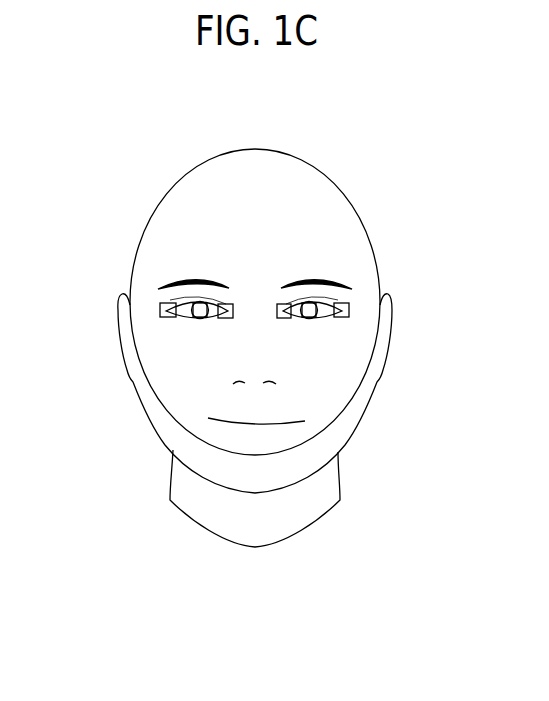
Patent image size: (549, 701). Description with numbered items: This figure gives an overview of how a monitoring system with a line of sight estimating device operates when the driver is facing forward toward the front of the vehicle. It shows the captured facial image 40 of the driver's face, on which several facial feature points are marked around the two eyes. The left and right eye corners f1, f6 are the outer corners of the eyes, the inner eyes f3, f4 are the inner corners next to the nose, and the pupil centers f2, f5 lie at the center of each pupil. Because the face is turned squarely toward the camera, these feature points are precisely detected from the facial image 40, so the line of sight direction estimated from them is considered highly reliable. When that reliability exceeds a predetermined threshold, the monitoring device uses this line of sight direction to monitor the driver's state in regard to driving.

The facial image 40 is at (380, 447).
The left eye corner f1 is at (162, 308).
The pupil center f2 is at (173, 290).
The inner eye f3 is at (232, 303).
The inner eye f4 is at (283, 303).
The pupil center f5 is at (333, 298).
The right eye corner f6 is at (350, 305).